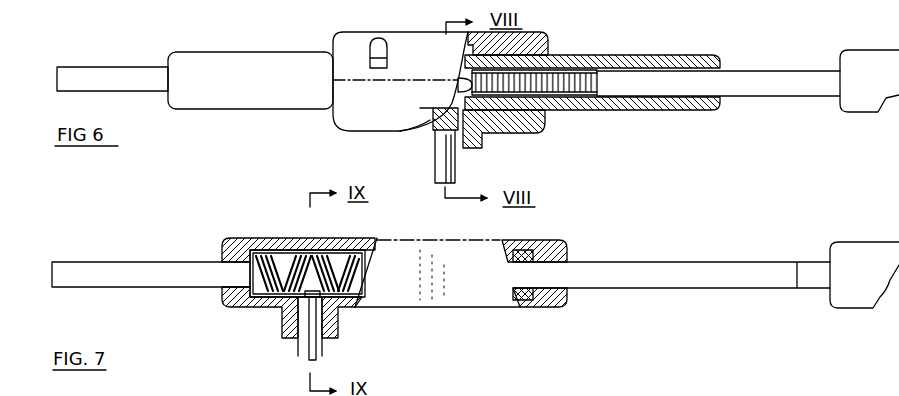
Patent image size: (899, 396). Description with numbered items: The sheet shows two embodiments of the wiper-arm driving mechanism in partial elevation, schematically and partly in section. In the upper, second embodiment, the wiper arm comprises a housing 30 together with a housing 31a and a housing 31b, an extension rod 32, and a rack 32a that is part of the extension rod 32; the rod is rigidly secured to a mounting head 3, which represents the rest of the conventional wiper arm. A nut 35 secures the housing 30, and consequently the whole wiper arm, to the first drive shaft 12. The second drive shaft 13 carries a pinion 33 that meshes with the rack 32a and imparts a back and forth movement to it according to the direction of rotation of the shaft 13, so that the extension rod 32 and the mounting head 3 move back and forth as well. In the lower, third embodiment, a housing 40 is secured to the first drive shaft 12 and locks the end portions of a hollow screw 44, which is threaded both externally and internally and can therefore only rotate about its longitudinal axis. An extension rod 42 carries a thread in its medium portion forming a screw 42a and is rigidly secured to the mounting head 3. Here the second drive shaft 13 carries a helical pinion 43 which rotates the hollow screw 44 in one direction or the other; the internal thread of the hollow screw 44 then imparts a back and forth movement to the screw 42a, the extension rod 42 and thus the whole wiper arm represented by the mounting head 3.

In FIG. 6, the mounting head 3 is at (855, 58).
In FIG. 7, the mounting head 3 is at (835, 252).
In FIG. 6, the first drive shaft 12 is at (437, 170).
In FIG. 7, the first drive shaft 12 is at (322, 346).
In FIG. 6, the second drive shaft 13 is at (455, 110).
In FIG. 7, the second drive shaft 13 is at (298, 346).
In FIG. 6, the housing 30 is at (348, 50).
In FIG. 6, the housing 31a is at (248, 67).
In FIG. 6, the housing 31b is at (650, 57).
In FIG. 6, the extension rod 32 is at (121, 70).
In FIG. 6, the rack 32a is at (533, 83).
In FIG. 6, the pinion 33 is at (457, 85).
In FIG. 6, the nut 35 is at (425, 130).
In FIG. 7, the housing 40 is at (270, 240).
In FIG. 7, the extension rod 42 is at (108, 267).
In FIG. 7, the screw 42a is at (358, 250).
In FIG. 7, the helical pinion 43 is at (312, 255).
In FIG. 7, the hollow screw 44 is at (250, 272).